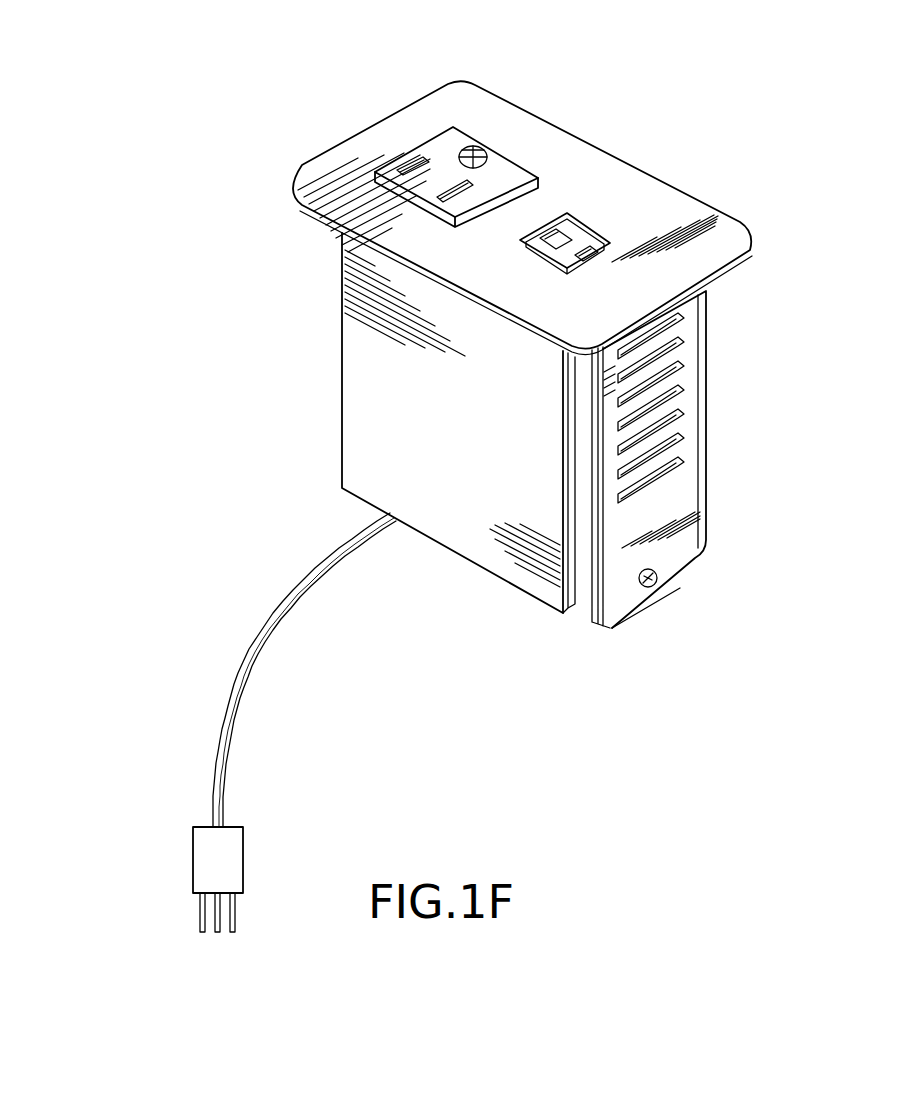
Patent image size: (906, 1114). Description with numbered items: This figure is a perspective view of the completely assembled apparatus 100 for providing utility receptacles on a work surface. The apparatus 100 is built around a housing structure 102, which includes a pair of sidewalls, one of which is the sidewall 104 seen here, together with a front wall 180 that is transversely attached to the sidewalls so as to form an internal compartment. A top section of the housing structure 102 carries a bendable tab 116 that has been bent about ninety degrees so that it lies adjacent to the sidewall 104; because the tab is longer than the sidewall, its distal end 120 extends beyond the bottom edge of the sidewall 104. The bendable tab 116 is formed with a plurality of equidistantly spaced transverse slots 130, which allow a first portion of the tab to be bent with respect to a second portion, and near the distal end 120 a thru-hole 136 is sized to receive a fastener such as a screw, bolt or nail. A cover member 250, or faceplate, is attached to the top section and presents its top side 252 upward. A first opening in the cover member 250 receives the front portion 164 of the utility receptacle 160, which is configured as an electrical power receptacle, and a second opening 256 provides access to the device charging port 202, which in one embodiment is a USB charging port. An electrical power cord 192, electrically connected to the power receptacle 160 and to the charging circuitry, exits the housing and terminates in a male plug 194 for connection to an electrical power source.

The apparatus 100 is at (178, 101).
The housing structure 102 is at (353, 378).
The sidewall 104 is at (577, 594).
The bendable tab 116 is at (670, 518).
The distal end 120 is at (677, 593).
The transverse slots 130 is at (684, 319).
The thru-hole 136 is at (648, 588).
The utility receptacle 160 is at (450, 143).
The front portion 164 is at (503, 167).
The front wall 180 is at (465, 523).
The electrical power cord 192 is at (243, 647).
The male plug 194 is at (193, 860).
The device charging port 202 is at (566, 227).
The cover member 250 is at (592, 158).
The top side 252 is at (333, 167).
The second opening 256 is at (612, 243).